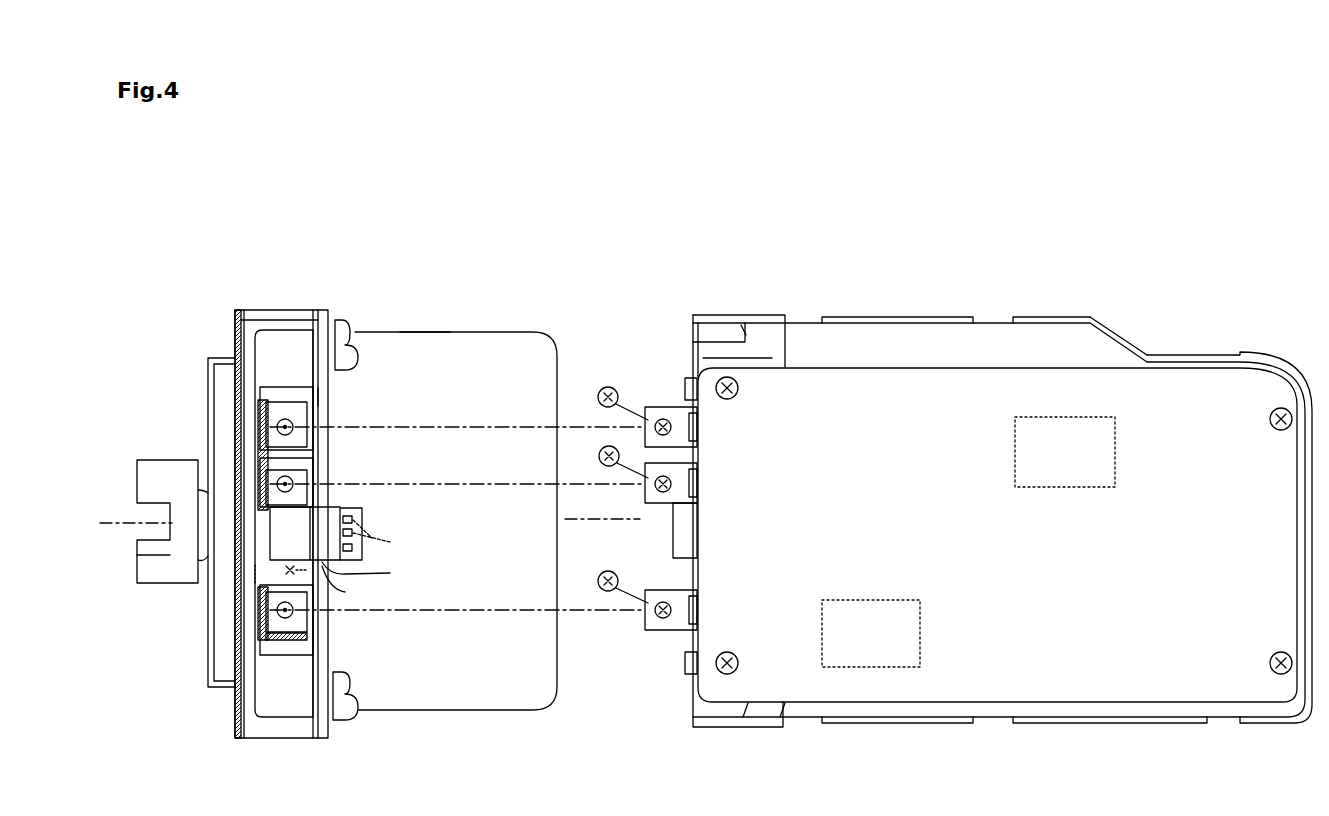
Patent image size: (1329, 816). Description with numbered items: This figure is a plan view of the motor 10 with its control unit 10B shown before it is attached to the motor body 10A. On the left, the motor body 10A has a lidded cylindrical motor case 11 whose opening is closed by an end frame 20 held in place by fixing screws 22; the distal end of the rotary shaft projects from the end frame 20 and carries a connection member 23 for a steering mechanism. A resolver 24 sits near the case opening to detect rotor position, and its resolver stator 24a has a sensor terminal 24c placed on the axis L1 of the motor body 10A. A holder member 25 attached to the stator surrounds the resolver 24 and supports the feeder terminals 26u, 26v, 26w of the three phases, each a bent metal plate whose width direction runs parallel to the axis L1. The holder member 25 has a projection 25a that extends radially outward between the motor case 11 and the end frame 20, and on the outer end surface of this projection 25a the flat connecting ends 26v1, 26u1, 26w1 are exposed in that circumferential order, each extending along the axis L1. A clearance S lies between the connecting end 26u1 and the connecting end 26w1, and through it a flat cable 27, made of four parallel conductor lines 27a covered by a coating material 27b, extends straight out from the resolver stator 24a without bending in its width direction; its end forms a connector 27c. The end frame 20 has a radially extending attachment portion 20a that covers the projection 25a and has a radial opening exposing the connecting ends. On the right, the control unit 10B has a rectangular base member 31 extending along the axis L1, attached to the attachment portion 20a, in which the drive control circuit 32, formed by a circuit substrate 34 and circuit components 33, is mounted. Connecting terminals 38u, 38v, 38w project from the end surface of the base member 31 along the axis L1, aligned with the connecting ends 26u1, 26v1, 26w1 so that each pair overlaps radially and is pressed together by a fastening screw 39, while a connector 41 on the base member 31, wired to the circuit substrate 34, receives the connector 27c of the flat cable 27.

The motor 10 is at (727, 252).
The motor body 10A is at (456, 496).
The control unit 10B is at (998, 498).
The motor case 11 is at (425, 332).
The end frame 20 is at (208, 376).
The attachment portion 20a is at (245, 305).
The fixing screws 22 is at (354, 321).
The connection member 23 is at (152, 458).
The resolver 24 is at (207, 526).
The resolver stator 24a is at (253, 577).
The sensor terminal 24c is at (305, 540).
The holder member 25 is at (381, 388).
The projection 25a is at (320, 398).
The feeder terminal of V phase 26v is at (364, 418).
The connecting end of V phase 26v1 is at (320, 417).
The feeder terminal of U phase 26u is at (364, 479).
The connecting end of U phase 26u1 is at (320, 471).
The feeder terminal of W phase 26w is at (368, 620).
The connecting end of W phase 26w1 is at (322, 627).
The flat cable 27 is at (404, 544).
The conductor lines 27a is at (393, 540).
The coating material 27b is at (378, 570).
The connector 27c is at (363, 511).
The clearance S is at (342, 587).
The fastening screw 39 is at (599, 391).
The connecting terminal of V phase 38v is at (660, 405).
The connecting terminal of U phase 38u is at (645, 492).
The connecting terminal of W phase 38w is at (657, 632).
The axis L1 is at (578, 524).
The connector 41 is at (690, 560).
The base member 31 is at (1068, 323).
The circuit substrate 34 is at (1134, 377).
The drive control circuit 32 is at (1180, 383).
The circuit components 33 is at (1115, 450).